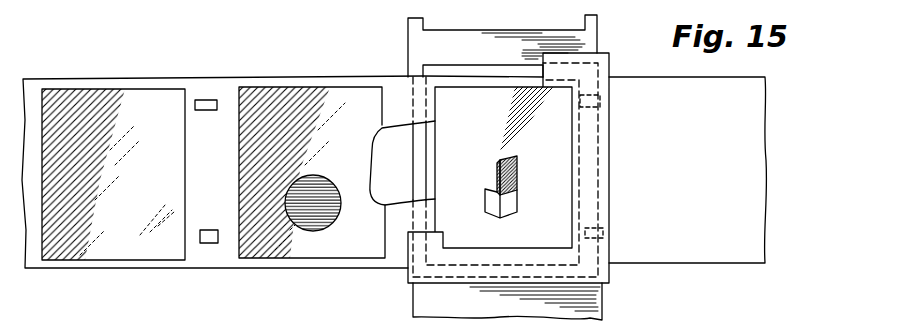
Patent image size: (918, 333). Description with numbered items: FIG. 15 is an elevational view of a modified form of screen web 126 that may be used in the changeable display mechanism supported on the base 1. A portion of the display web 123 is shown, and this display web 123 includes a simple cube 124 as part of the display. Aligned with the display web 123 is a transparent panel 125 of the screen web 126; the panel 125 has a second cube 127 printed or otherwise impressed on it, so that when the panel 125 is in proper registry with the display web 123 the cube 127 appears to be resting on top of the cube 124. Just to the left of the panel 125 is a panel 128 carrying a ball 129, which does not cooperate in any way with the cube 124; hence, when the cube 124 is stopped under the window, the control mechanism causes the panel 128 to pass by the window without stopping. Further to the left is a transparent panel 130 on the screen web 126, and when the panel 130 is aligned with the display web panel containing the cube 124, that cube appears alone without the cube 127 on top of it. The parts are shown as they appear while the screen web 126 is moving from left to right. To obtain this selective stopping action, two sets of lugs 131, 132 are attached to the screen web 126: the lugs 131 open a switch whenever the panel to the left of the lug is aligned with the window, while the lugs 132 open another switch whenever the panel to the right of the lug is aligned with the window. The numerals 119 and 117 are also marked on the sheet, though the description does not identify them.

The base 1 is at (222, 268).
The transparent panel 130 is at (138, 250).
The panel 128 is at (342, 244).
The ball 129 is at (314, 177).
The lugs 132 is at (204, 111).
The lugs 131 is at (212, 229).
The transparent panel 125 is at (513, 115).
The screen web 126 is at (750, 191).
The display web 123 is at (496, 14).
The second cube 127 is at (500, 162).
The simple cube 124 is at (485, 190).
The element 119 is at (315, 4).
The element 117 is at (377, 4).